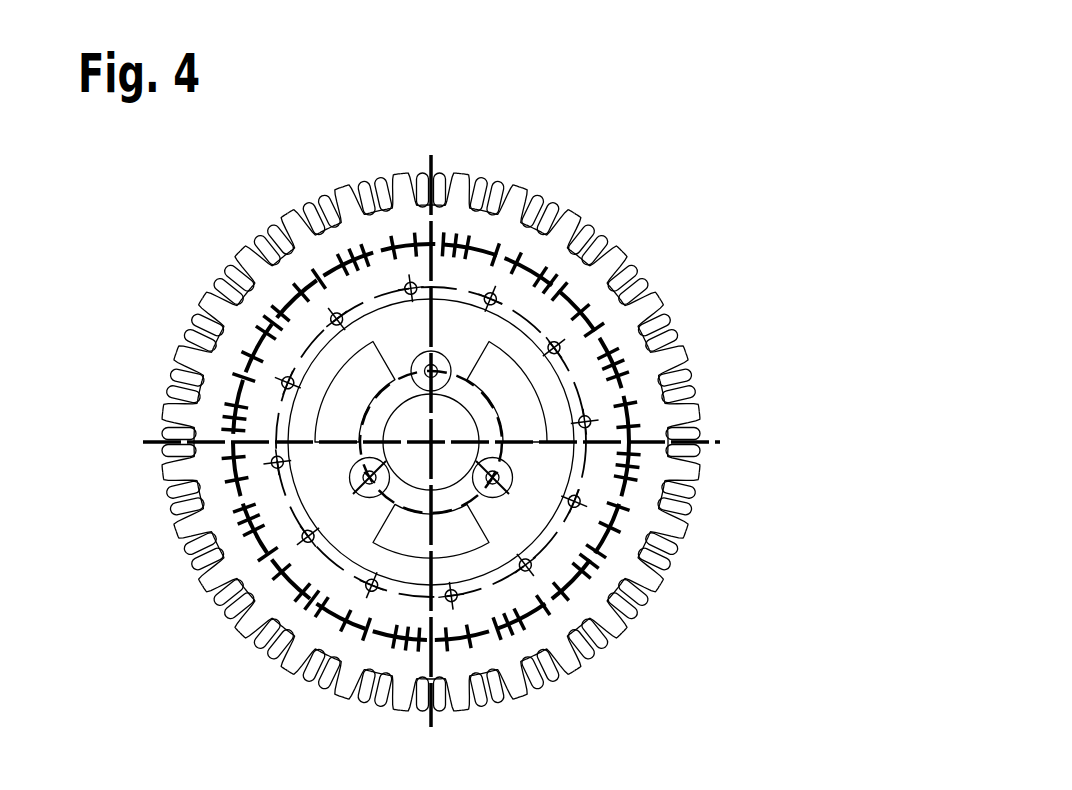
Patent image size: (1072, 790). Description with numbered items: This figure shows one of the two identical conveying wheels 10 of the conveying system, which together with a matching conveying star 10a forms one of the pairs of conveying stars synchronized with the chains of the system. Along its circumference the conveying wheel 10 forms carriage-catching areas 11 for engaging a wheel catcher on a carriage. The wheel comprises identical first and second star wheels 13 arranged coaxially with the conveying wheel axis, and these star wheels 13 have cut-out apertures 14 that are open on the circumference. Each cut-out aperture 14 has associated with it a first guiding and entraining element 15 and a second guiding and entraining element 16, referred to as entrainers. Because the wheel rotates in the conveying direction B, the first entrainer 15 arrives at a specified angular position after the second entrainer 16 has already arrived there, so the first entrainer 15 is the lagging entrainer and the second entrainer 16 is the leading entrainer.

The conveying wheel 10 is at (817, 355).
The conveying star 10a is at (431, 446).
The carriage-catching area 11 is at (593, 180).
The star wheel 13 is at (627, 600).
The cut-out aperture 14 is at (542, 210).
The first guiding and entraining element 15 is at (576, 214).
The second guiding and entraining element 16 is at (552, 202).
The conveying direction B is at (250, 182).